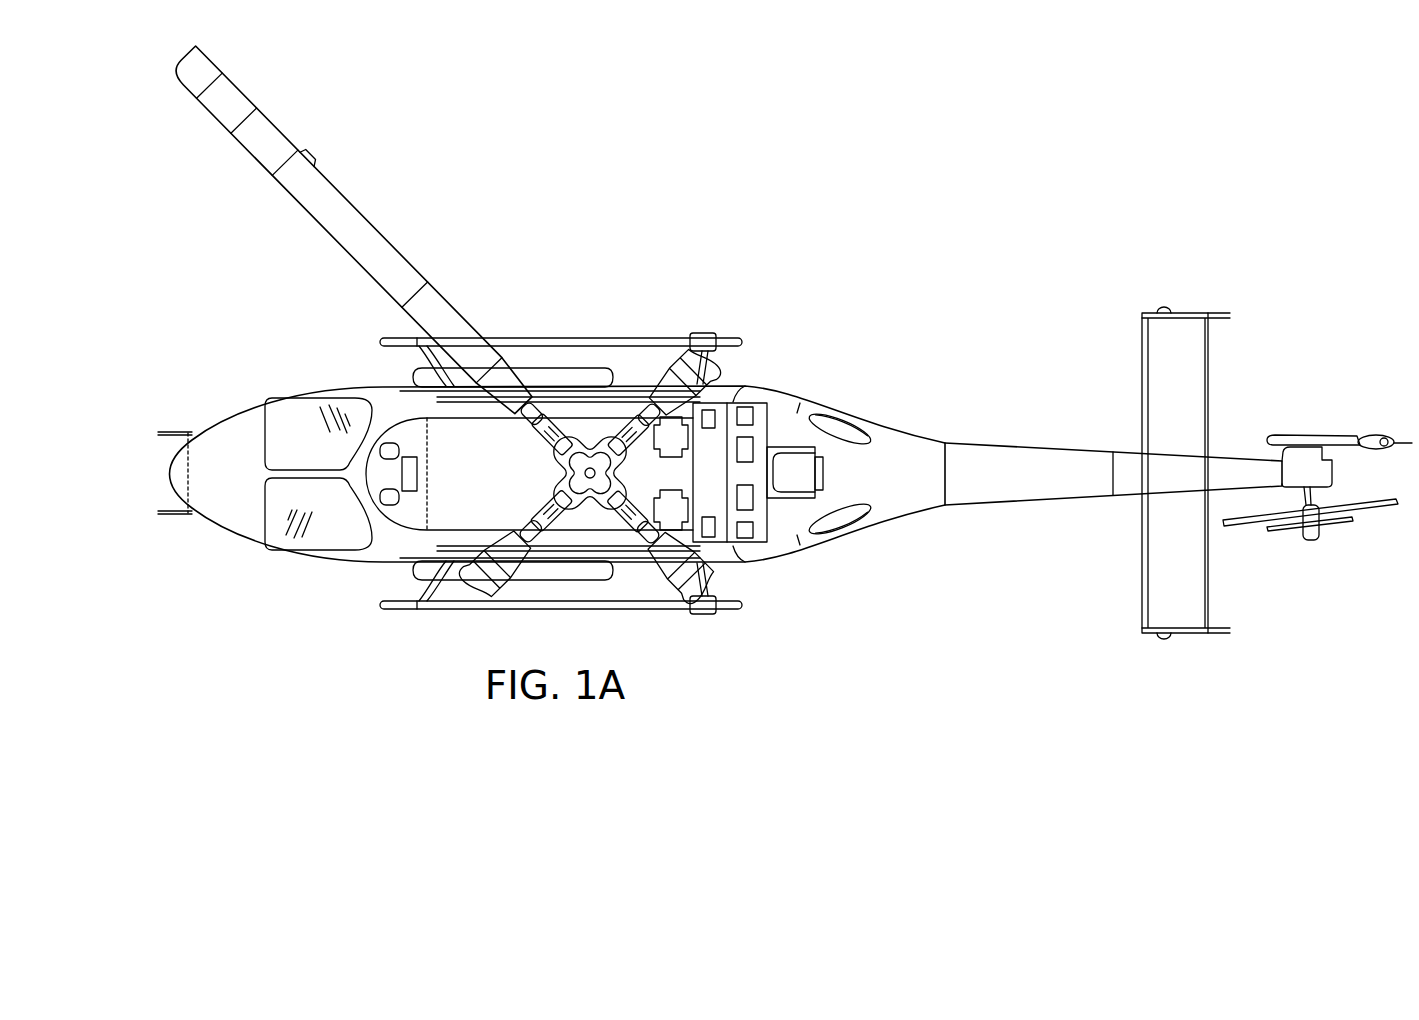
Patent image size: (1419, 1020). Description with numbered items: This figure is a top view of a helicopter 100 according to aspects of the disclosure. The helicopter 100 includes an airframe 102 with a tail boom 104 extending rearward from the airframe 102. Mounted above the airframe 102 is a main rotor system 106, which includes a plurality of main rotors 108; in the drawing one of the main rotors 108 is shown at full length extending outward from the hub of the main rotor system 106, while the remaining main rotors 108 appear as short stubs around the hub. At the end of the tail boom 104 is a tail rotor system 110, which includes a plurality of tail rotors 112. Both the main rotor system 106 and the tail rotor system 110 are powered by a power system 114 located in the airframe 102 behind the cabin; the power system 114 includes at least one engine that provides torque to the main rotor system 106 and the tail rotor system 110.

The helicopter 100 is at (1027, 138).
The airframe 102 is at (788, 549).
The tail boom 104 is at (1020, 503).
The main rotor system 106 is at (585, 434).
The main rotors 108 is at (395, 240).
The tail rotor system 110 is at (1316, 560).
The tail rotors 112 is at (1375, 510).
The power system 114 is at (738, 401).